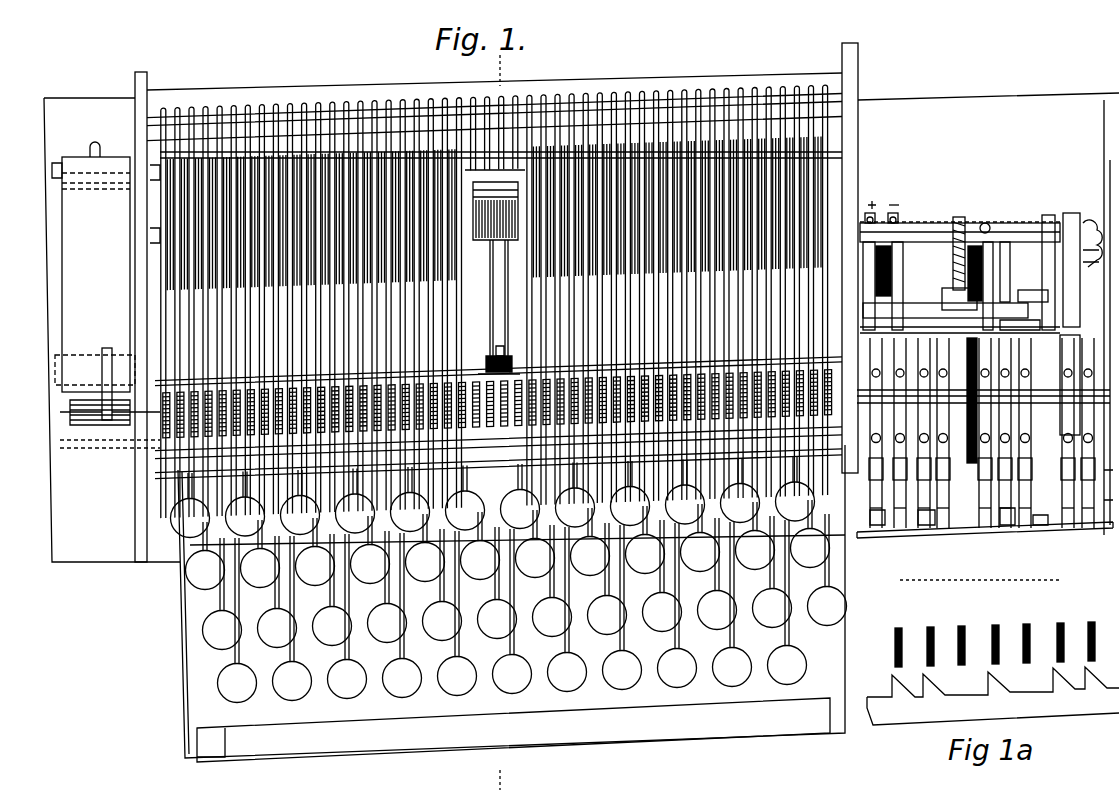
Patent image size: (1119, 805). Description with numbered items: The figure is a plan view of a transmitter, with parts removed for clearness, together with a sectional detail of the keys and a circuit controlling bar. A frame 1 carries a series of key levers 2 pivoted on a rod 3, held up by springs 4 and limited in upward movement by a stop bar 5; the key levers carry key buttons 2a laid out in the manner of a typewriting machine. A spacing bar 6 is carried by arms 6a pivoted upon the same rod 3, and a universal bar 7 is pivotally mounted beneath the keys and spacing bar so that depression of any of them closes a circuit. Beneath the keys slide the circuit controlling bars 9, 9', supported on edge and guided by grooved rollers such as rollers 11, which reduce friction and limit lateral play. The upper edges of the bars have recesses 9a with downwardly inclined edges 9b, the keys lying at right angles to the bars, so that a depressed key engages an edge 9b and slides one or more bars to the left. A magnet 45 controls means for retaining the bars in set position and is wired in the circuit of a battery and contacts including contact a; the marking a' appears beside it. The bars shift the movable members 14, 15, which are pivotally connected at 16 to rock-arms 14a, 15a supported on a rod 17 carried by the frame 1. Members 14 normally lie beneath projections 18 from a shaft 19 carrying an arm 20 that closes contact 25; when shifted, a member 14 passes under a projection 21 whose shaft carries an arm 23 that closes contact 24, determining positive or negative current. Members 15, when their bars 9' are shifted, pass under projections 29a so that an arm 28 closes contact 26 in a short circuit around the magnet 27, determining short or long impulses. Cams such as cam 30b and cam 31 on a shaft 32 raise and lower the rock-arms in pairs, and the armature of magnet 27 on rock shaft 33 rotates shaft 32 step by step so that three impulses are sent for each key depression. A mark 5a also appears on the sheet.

In FIG. 1, the frame 1 is at (135, 86).
In FIG. 1, the key levers 2 is at (730, 87).
In FIG. 1, the key buttons 2a is at (232, 700).
In FIG. 1, the rod or shaft 3 is at (152, 124).
In FIG. 1, the springs 4 is at (835, 156).
In FIG. 1, the stop bar 5 is at (968, 203).
In FIG. 1, the direction of movement 5a is at (985, 585).
In FIG. 1, the spacing bar 6 is at (511, 601).
In FIG. 1, the arms 6a is at (182, 692).
In FIG. 1, the universal bar 7 is at (535, 69).
In FIG. 1, the circuit controlling bars 9 is at (93, 511).
In FIG. 1a, the circuit controlling bars 9 is at (993, 696).
In FIG. 1, the circuit controlling bars 9' is at (110, 457).
In FIG. 1a, the recesses 9a is at (924, 690).
In FIG. 1a, the inclined edges 9b is at (1108, 683).
In FIG. 1, the grooved rollers 11 is at (1095, 509).
In FIG. 1, the movable members 14 is at (908, 433).
In FIG. 1, the rock-arms 14a is at (888, 528).
In FIG. 1, the movable members 15 is at (1003, 433).
In FIG. 1, the rock-arms 15a is at (1008, 528).
In FIG. 1, the pivotal connection 16 is at (983, 421).
In FIG. 1, the rod or shaft 17 is at (985, 533).
In FIG. 1, the projections 18 is at (1019, 433).
In FIG. 1, the shaft 19 is at (922, 330).
In FIG. 1, the arm 20 is at (486, 205).
In FIG. 1, the projection 21 is at (508, 219).
In FIG. 1, the arm 23 is at (900, 250).
In FIG. 1, the contact 24 is at (900, 212).
In FIG. 1, the contact 25 is at (880, 212).
In FIG. 1, the contact 26 is at (986, 222).
In FIG. 1, the magnet 27 is at (998, 302).
In FIG. 1, the arm 28 is at (1010, 272).
In FIG. 1, the projections 29a is at (1020, 327).
In FIG. 1, the cam 30b is at (932, 528).
In FIG. 1, the cam 31 is at (1038, 528).
In FIG. 1, the shaft 32 is at (1082, 368).
In FIG. 1, the rock shaft 33 is at (1020, 296).
In FIG. 1, the magnet 45 is at (106, 283).
In FIG. 1, the contact a is at (499, 307).
In FIG. 1, the type a' is at (513, 336).